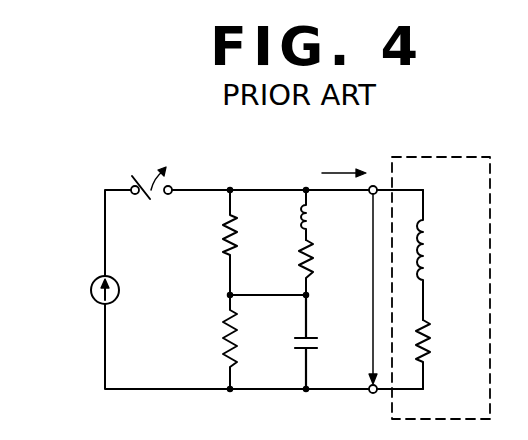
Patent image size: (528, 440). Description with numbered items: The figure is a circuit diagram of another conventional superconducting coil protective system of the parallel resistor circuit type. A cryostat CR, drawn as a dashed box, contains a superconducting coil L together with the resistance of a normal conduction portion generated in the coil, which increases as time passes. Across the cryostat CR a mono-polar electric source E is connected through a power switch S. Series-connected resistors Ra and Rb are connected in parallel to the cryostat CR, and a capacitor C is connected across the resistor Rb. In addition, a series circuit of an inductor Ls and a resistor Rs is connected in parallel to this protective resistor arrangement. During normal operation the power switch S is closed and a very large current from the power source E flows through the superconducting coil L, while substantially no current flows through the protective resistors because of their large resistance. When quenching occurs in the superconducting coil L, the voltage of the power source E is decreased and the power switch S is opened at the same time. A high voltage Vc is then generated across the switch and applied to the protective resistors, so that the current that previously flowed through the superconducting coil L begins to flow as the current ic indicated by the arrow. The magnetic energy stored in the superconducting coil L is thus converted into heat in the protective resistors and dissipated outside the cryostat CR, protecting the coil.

The power switch S is at (151, 170).
The mono-polar electric source E is at (91, 291).
The resistor Ra is at (250, 242).
The resistor Rb is at (250, 342).
The inductor Ls is at (325, 215).
The resistor Rs is at (326, 267).
The capacitor C is at (319, 342).
The high voltage Vc is at (358, 289).
The electric current ic is at (344, 161).
The superconducting coil L is at (436, 255).
The cryostat CR is at (418, 153).